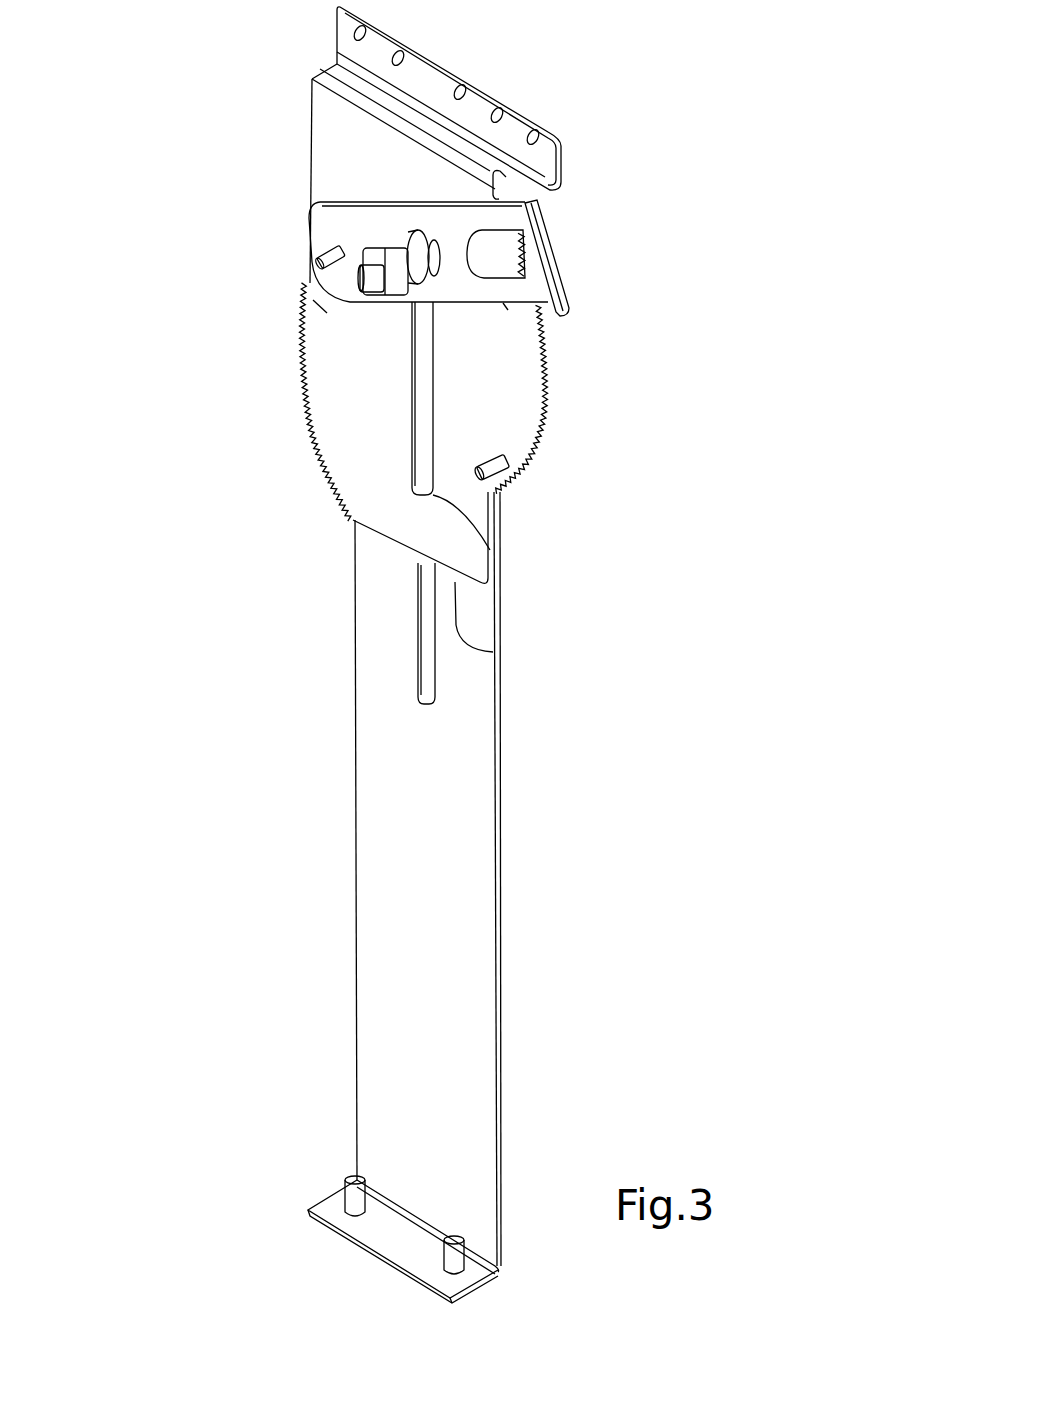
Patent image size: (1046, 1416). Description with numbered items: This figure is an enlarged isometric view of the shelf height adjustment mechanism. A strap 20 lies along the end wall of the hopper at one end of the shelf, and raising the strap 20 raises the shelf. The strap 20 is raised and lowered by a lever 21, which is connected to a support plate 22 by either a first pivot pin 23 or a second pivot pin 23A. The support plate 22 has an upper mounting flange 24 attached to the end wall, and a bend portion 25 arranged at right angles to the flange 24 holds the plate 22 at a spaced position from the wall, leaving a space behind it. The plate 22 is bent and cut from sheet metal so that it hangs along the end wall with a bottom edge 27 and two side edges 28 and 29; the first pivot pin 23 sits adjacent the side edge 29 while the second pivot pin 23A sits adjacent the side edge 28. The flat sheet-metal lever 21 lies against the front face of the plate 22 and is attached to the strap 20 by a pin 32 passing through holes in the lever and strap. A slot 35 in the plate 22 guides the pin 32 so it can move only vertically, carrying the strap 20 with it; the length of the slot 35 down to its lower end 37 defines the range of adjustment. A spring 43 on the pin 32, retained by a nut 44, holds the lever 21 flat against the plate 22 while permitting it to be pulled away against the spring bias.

The strap 20 is at (390, 890).
The lever 21 is at (455, 282).
The support plate 22 is at (457, 367).
The first pivot pin 23 is at (310, 283).
The second pivot pin 23A is at (505, 490).
The upper mounting flange 24 is at (435, 78).
The bend portion 25 is at (330, 58).
The bottom edge 27 is at (500, 652).
The side edge 28 is at (540, 430).
The side edge 29 is at (315, 435).
The pin 32 is at (378, 302).
The slot 35 is at (543, 400).
The lower end 37 is at (490, 550).
The spring 43 is at (395, 248).
The nut 44 is at (400, 302).